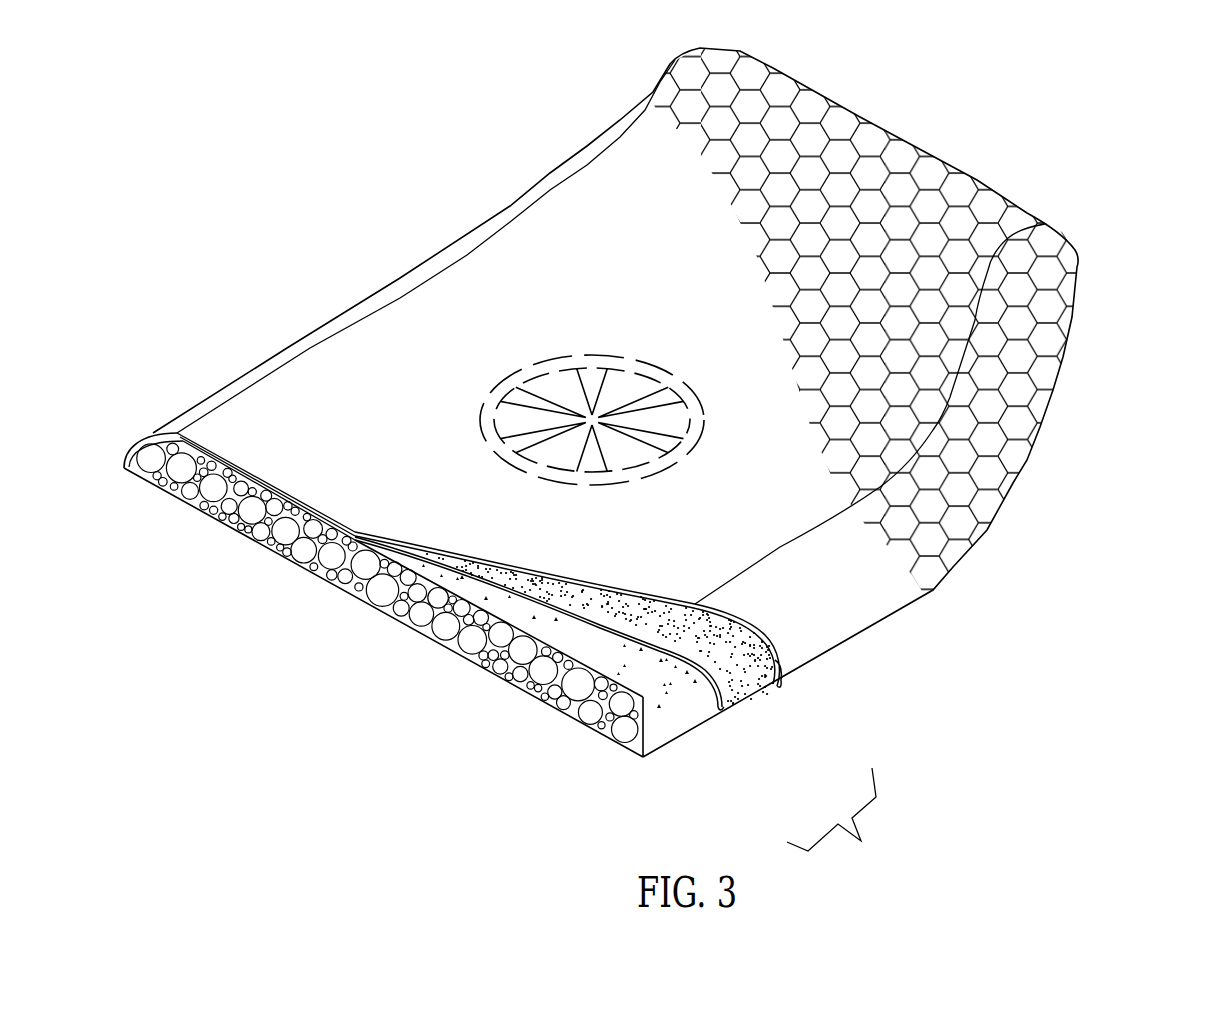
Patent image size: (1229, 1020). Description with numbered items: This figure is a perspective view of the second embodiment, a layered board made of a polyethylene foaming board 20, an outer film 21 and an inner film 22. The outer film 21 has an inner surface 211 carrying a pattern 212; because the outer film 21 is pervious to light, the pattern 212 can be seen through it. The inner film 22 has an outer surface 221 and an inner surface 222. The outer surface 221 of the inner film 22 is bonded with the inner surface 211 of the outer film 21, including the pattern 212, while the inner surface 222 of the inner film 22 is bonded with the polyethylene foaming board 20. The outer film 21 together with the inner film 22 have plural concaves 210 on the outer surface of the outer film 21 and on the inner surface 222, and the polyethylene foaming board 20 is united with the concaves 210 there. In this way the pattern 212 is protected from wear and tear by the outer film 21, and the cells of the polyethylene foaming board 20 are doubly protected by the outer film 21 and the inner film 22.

The polyethylene foaming board 20 is at (533, 626).
The outer film 21 is at (250, 410).
The inner film 22 is at (843, 821).
The concaves 210 is at (1047, 370).
The inner surface 211 is at (778, 686).
The pattern 212 is at (603, 370).
The outer surface 221 is at (728, 697).
The inner surface 222 is at (712, 708).